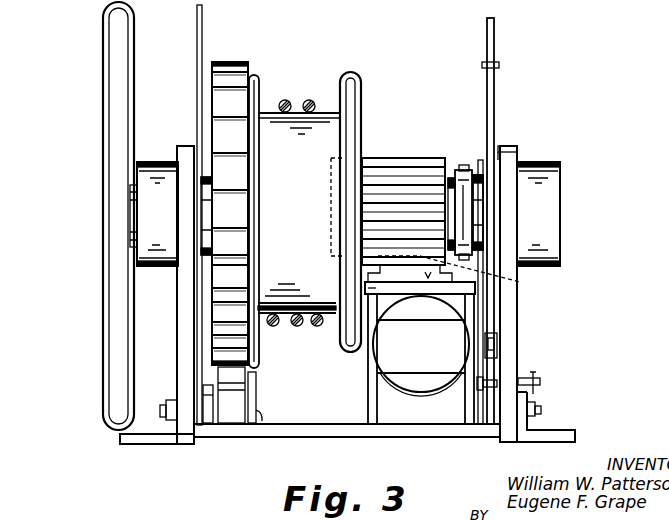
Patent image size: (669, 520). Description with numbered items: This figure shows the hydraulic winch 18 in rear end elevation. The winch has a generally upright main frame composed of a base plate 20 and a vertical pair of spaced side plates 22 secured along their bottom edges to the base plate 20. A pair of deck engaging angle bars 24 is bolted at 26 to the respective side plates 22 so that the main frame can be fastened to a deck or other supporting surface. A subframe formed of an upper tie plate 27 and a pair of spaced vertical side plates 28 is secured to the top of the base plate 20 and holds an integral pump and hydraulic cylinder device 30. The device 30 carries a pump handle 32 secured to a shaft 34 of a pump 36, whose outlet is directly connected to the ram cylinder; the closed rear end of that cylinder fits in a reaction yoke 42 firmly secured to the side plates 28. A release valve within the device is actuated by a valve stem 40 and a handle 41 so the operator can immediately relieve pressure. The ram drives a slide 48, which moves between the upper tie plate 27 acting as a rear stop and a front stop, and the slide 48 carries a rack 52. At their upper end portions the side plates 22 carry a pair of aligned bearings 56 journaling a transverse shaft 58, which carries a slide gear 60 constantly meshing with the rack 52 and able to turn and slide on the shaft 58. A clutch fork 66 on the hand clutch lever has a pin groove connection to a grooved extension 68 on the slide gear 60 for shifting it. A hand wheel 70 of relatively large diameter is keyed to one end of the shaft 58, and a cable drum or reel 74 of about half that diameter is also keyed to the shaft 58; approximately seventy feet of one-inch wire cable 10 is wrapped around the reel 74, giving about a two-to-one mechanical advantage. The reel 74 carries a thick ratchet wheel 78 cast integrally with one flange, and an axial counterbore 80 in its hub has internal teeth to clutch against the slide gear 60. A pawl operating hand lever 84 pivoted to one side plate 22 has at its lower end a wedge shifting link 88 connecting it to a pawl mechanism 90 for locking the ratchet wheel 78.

The wire cable 10 is at (287, 99).
The winch 18 is at (575, 436).
The base plate 20 is at (298, 437).
The side plates 22 is at (177, 303).
The deck engaging angle bars 24 is at (140, 444).
The bolts 26 is at (163, 404).
The upper tie plate 27 is at (372, 288).
The side plates of subframe 28 is at (368, 410).
The integral pump and hydraulic cylinder device 30 is at (409, 403).
The pump handle 32 is at (494, 104).
The shaft 34 is at (497, 346).
The pump 36 is at (482, 333).
The valve stem 40 is at (484, 378).
The handle 41 is at (541, 382).
The reaction yoke 42 is at (384, 352).
The slide 48 is at (368, 278).
The rack 52 is at (517, 283).
The bearings 56 is at (160, 162).
The transverse shaft 58 is at (498, 150).
The slide gear 60 is at (406, 158).
The clutch fork 66 is at (468, 175).
The grooved extension 68 is at (452, 178).
The hand wheel 70 is at (103, 30).
The cable drum or reel 74 is at (328, 112).
The ratchet wheel 78 is at (233, 62).
The axial counterbore 80 is at (331, 258).
The pawl operating hand lever 84 is at (197, 30).
The wedge shifting link 88 is at (212, 437).
The pawl mechanism 90 is at (258, 425).